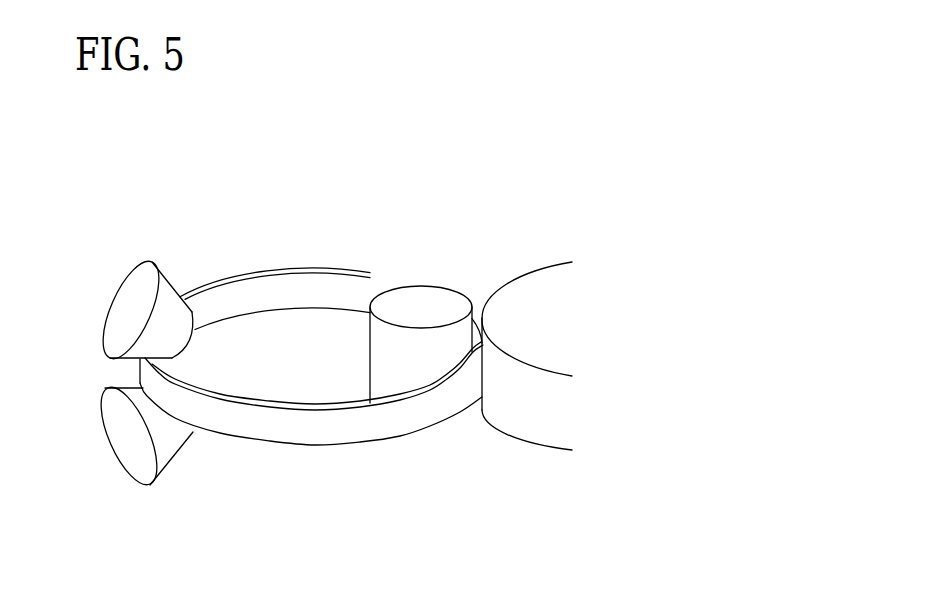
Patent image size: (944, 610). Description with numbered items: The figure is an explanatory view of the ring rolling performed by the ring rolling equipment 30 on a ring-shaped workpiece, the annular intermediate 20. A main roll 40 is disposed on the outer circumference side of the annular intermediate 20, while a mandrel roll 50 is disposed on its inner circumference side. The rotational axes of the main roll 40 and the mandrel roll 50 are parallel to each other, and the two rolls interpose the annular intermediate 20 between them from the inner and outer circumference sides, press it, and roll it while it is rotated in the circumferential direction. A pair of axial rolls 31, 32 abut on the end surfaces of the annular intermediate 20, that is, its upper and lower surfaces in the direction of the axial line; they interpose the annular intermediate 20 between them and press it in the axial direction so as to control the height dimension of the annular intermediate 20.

The annular intermediate 20 is at (315, 438).
The ring rolling equipment 30 is at (518, 281).
The axial roll 31 is at (149, 262).
The axial roll 32 is at (140, 488).
The main roll 40 is at (553, 259).
The mandrel roll 50 is at (441, 285).